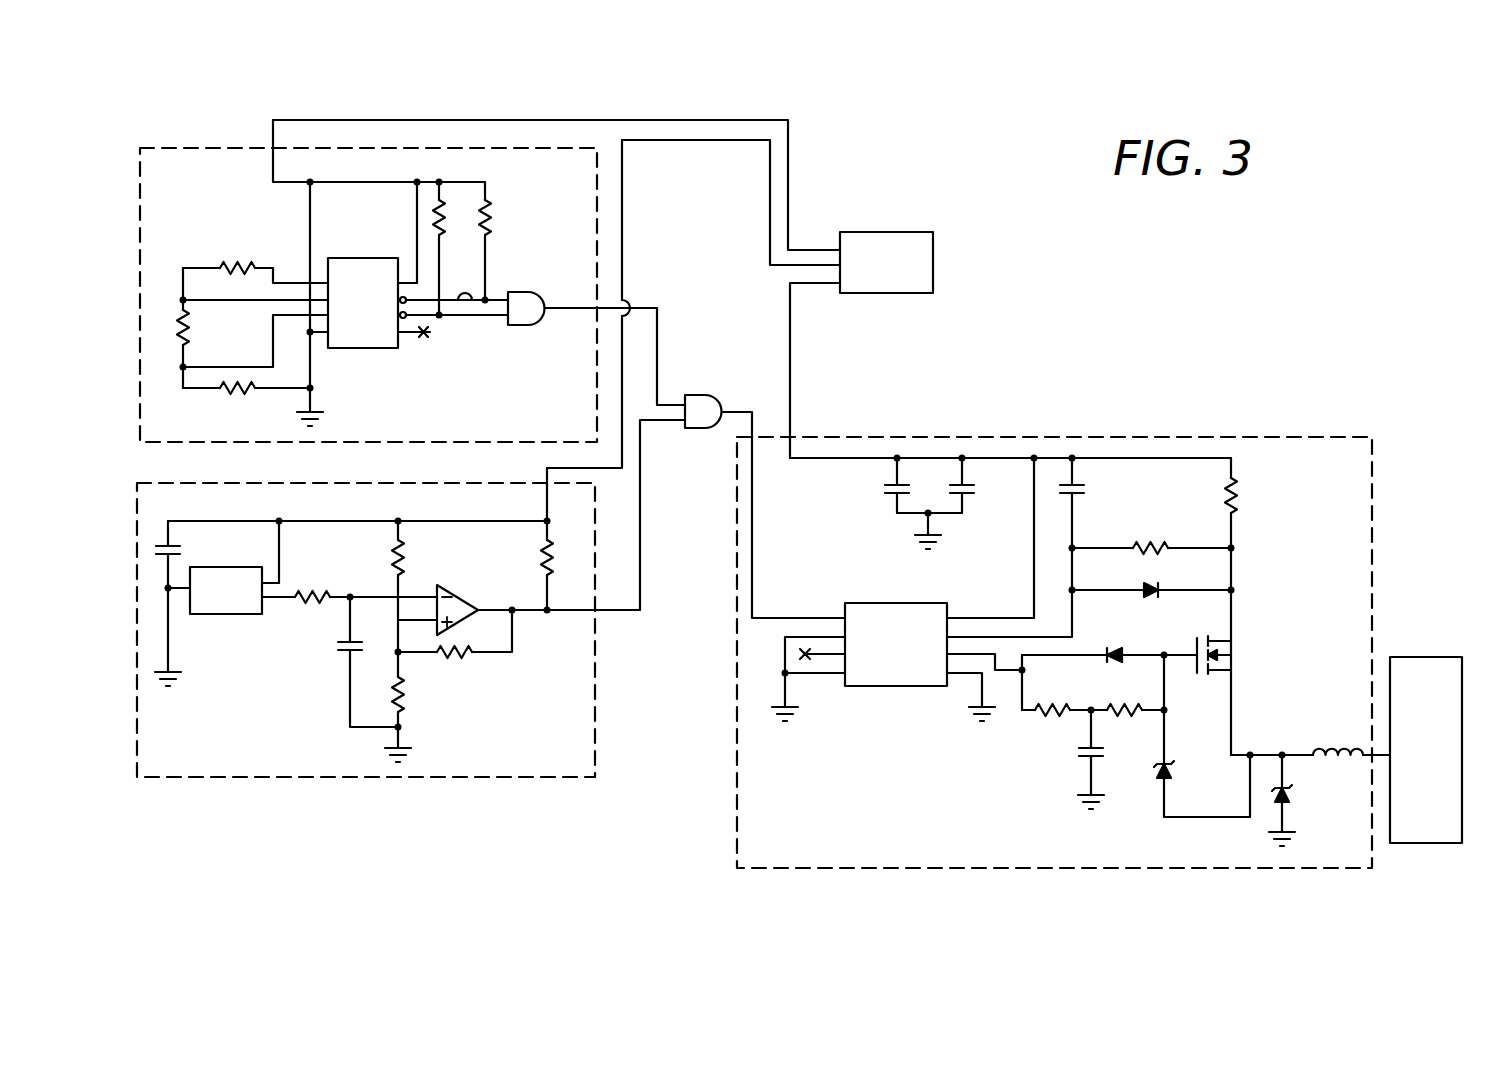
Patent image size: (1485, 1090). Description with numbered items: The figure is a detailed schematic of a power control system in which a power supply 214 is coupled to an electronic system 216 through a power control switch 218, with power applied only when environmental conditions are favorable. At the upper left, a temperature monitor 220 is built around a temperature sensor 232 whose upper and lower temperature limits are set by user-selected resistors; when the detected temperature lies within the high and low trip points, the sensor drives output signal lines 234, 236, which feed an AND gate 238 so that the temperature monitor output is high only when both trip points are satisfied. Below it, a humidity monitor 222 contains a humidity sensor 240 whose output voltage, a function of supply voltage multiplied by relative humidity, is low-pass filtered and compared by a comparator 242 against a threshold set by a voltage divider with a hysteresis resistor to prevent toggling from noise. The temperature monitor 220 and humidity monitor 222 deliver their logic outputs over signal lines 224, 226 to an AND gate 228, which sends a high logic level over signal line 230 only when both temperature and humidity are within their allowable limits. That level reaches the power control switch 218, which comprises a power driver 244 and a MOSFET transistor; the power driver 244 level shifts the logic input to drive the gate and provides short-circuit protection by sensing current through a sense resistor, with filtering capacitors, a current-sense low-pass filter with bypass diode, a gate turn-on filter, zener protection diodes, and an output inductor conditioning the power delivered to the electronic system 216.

The power supply 214 is at (905, 232).
The electronic system 216 is at (1437, 657).
The power control switch 218 is at (1063, 618).
The temperature monitor 220 is at (368, 254).
The humidity monitor 222 is at (388, 658).
The signal line 224 is at (658, 348).
The signal line 226 is at (640, 536).
The AND gate 228 is at (701, 426).
The signal line 230 is at (736, 412).
The temperature sensor 232 is at (363, 303).
The signal line 234 is at (470, 302).
The signal line 236 is at (455, 318).
The AND gate 238 is at (541, 322).
The humidity sensor 240 is at (226, 590).
The comparator 242 is at (458, 604).
The power driver 244 is at (896, 644).